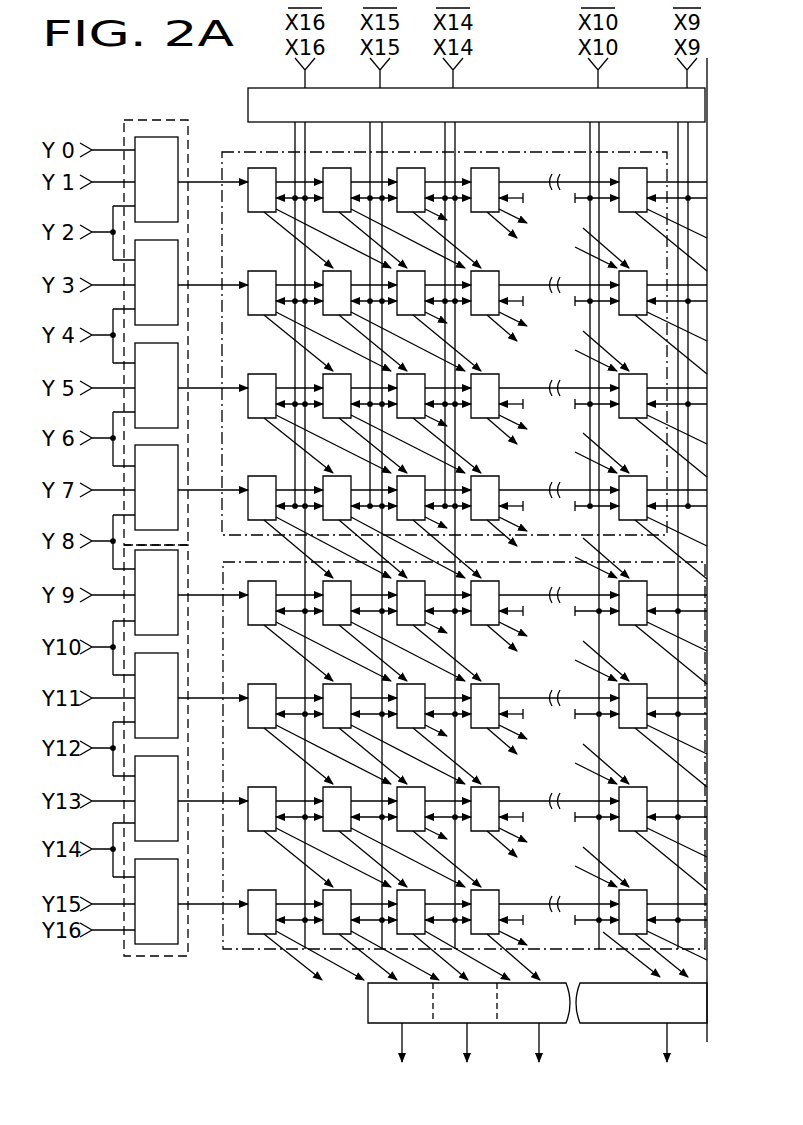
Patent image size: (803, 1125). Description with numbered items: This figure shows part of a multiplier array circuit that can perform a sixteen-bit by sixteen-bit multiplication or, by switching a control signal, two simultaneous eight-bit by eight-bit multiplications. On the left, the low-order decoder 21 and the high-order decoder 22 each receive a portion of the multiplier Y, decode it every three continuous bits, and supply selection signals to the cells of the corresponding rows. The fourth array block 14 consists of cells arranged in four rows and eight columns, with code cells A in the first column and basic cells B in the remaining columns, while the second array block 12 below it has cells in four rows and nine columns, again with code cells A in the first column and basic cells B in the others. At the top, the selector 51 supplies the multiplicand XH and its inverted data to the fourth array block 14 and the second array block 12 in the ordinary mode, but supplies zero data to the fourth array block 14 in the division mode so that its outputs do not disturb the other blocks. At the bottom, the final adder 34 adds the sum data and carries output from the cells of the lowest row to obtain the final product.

The second array block 12 is at (246, 950).
The fourth array block 14 is at (215, 152).
The low-order decoder 21 is at (143, 120).
The high-order decoder 22 is at (172, 958).
The final adder 34 is at (368, 991).
The selector 51 is at (498, 88).